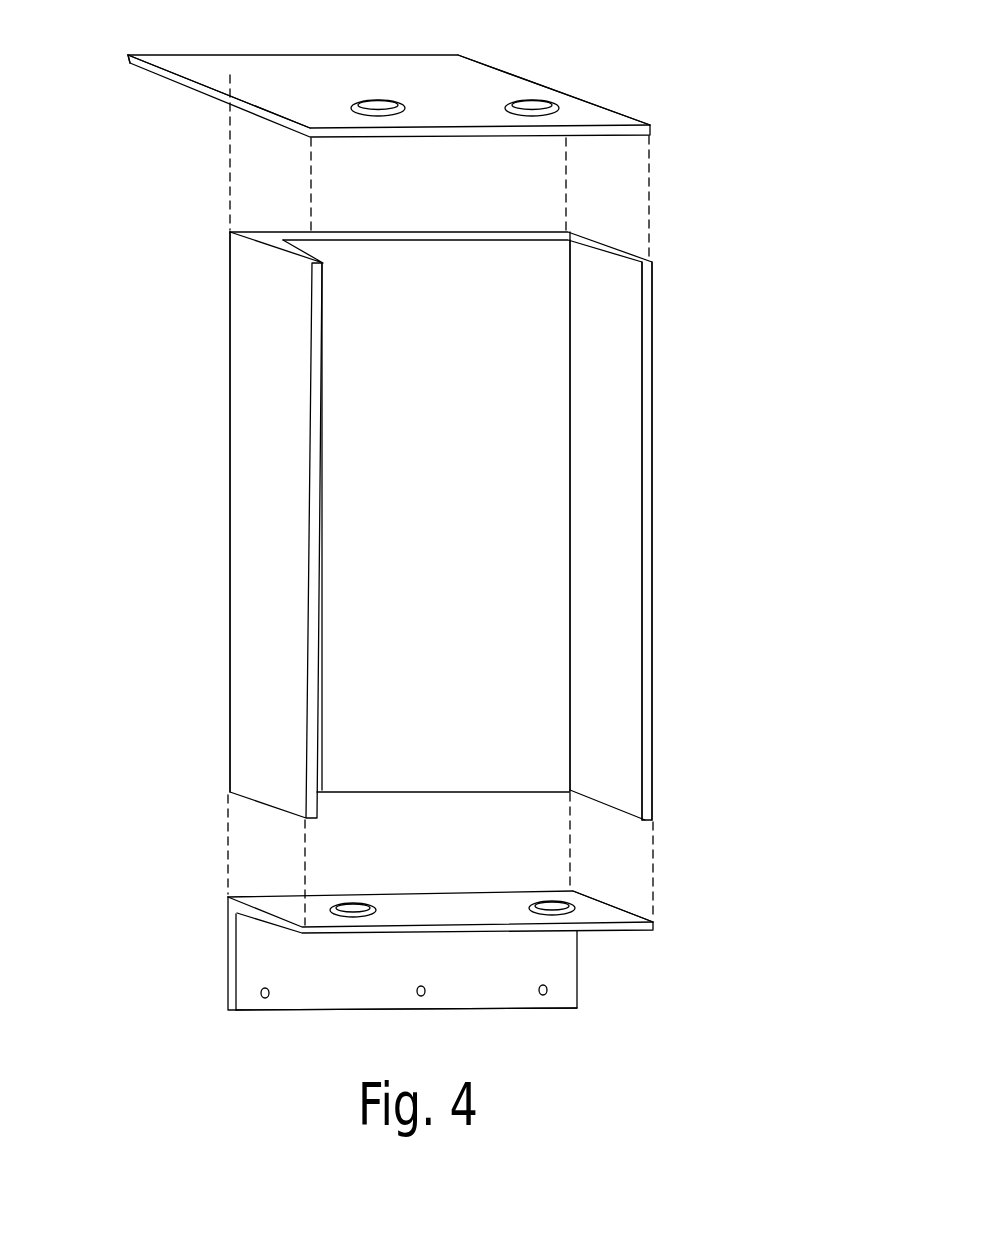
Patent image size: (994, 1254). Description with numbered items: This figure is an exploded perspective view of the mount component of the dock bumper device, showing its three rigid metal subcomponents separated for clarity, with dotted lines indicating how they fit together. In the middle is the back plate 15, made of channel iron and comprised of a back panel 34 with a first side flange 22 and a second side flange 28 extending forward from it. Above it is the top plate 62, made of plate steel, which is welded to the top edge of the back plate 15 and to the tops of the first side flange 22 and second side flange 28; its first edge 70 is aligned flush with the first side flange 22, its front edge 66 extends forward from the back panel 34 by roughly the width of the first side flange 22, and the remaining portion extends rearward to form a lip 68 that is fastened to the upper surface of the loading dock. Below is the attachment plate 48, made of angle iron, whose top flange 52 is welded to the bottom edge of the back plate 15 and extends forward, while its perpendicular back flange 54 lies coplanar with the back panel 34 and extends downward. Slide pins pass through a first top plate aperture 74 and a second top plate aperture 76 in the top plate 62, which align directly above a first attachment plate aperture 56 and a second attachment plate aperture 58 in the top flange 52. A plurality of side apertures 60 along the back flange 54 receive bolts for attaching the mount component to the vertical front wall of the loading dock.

The back plate 15 is at (572, 230).
The first side flange 22 is at (273, 446).
The second side flange 28 is at (597, 486).
The back panel 34 is at (420, 580).
The attachment plate 48 is at (228, 898).
The top flange 52 is at (605, 913).
The back flange 54 is at (335, 955).
The first attachment plate aperture 56 is at (353, 902).
The second attachment plate aperture 58 is at (552, 905).
The side apertures 60 is at (548, 988).
The top plate 62 is at (553, 85).
The front edge 66 is at (612, 133).
The lip 68 is at (228, 78).
The first edge 70 is at (178, 82).
The first top plate aperture 74 is at (378, 113).
The second top plate aperture 76 is at (533, 112).